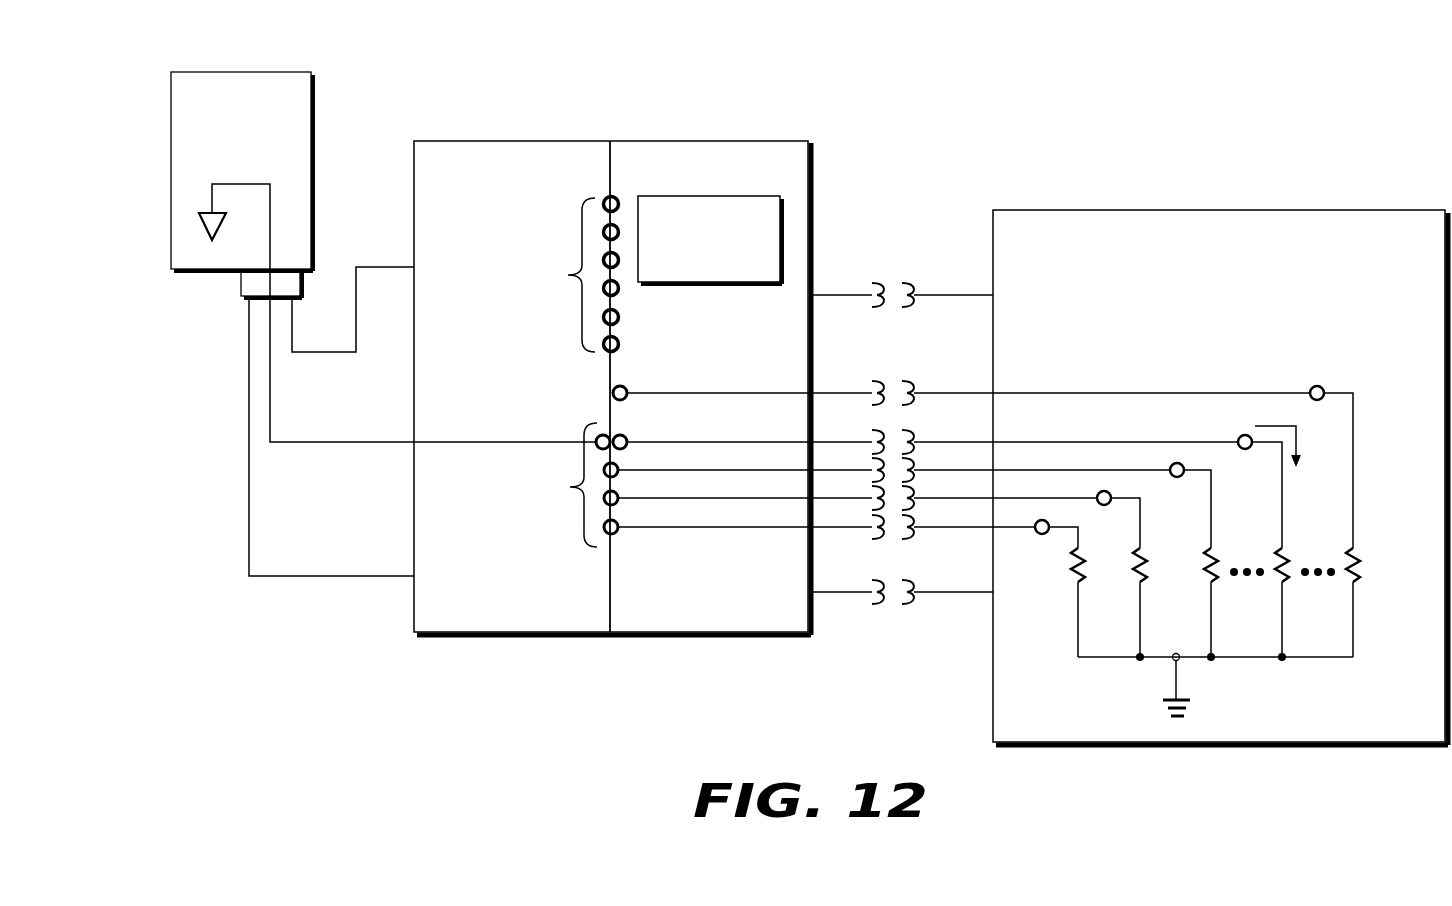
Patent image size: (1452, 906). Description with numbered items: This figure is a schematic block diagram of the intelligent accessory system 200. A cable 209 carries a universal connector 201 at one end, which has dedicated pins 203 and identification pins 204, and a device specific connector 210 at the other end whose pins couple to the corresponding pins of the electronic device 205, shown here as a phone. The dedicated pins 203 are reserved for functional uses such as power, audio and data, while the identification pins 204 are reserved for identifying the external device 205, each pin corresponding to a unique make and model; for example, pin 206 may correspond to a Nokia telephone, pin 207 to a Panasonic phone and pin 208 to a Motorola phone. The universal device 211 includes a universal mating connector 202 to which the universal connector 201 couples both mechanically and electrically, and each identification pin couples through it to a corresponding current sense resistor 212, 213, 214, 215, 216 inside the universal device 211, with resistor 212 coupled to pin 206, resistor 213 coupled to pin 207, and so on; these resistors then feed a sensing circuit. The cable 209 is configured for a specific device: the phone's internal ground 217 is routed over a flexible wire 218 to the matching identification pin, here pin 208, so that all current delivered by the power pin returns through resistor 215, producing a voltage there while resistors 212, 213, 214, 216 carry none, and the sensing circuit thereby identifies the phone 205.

The system 200 is at (832, 748).
The universal connector 201 is at (488, 620).
The universal mating connector 202 is at (682, 623).
The dedicated pins 203 is at (575, 243).
The identification pins 204 is at (573, 527).
The electronic device 205 is at (316, 99).
The identification pin 206 is at (641, 530).
The identification pin 207 is at (708, 501).
The identification pin 208 is at (771, 443).
The cable 209 is at (250, 495).
The device specific connector 210 is at (240, 288).
The universal device 211 is at (1022, 210).
The current sense resistor 212 is at (1067, 576).
The current sense resistor 213 is at (1135, 585).
The current sense resistor 214 is at (1203, 582).
The current sense resistor 215 is at (1272, 570).
The current sense resistor 216 is at (1362, 578).
The internal ground 217 is at (195, 220).
The identification line 218 is at (299, 443).